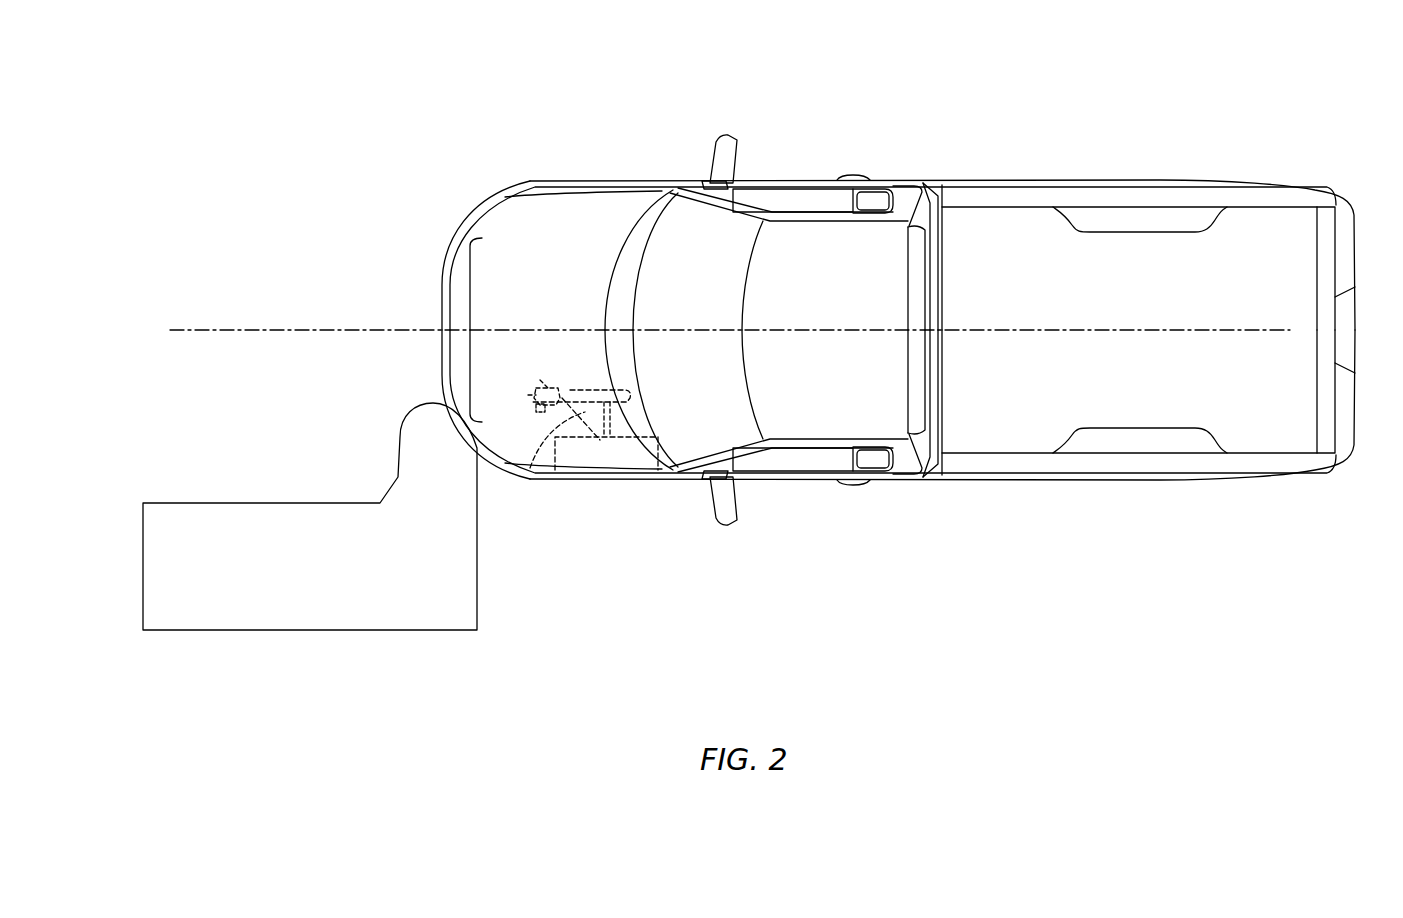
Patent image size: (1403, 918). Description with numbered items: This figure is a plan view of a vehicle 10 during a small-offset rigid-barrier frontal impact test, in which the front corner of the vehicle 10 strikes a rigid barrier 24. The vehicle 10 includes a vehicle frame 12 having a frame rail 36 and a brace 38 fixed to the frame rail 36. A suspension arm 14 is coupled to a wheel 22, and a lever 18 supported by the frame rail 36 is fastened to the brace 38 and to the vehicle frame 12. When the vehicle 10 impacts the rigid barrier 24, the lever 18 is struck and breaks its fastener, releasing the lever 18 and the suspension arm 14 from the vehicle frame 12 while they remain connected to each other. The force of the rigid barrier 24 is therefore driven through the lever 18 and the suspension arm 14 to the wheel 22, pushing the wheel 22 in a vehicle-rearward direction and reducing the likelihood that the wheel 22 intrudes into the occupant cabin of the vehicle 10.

The vehicle 10 is at (856, 88).
The vehicle frame 12 is at (586, 391).
The suspension arm 14 is at (538, 462).
The lever 18 is at (542, 416).
The wheel 22 is at (620, 484).
The rigid barrier 24 is at (417, 604).
The frame rail 36 is at (619, 397).
The brace 38 is at (548, 386).